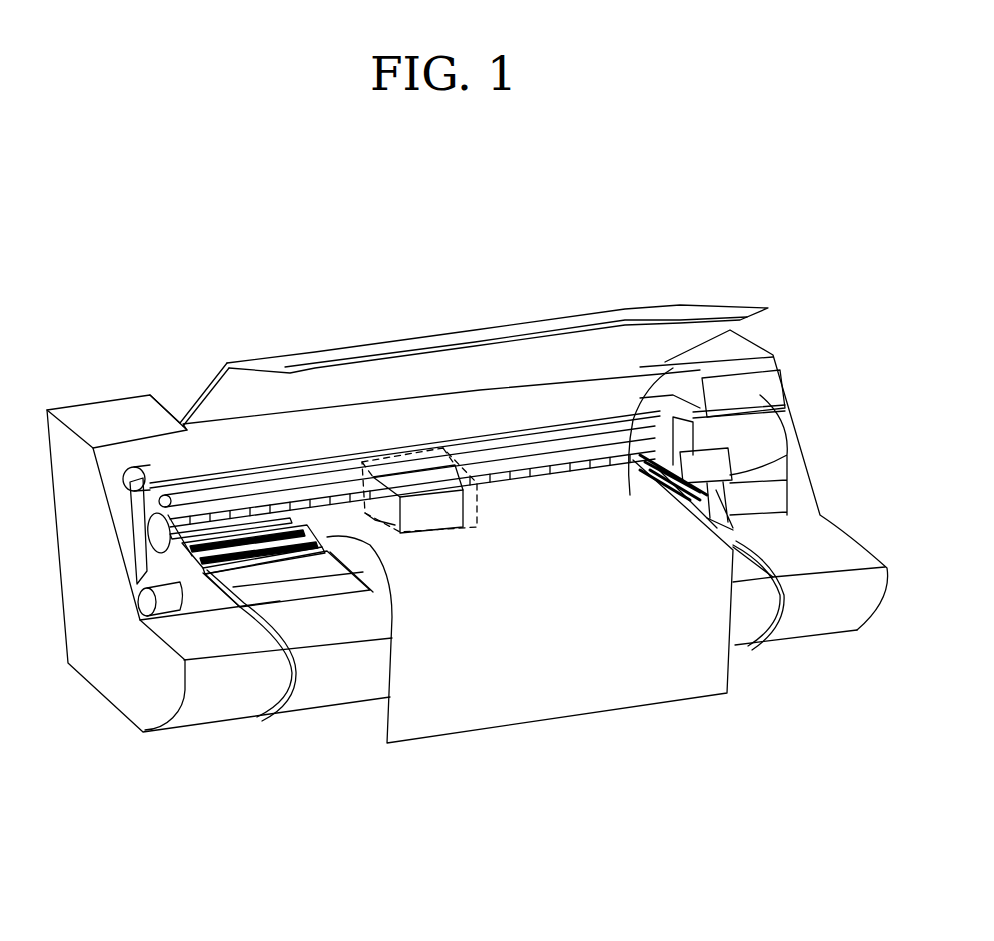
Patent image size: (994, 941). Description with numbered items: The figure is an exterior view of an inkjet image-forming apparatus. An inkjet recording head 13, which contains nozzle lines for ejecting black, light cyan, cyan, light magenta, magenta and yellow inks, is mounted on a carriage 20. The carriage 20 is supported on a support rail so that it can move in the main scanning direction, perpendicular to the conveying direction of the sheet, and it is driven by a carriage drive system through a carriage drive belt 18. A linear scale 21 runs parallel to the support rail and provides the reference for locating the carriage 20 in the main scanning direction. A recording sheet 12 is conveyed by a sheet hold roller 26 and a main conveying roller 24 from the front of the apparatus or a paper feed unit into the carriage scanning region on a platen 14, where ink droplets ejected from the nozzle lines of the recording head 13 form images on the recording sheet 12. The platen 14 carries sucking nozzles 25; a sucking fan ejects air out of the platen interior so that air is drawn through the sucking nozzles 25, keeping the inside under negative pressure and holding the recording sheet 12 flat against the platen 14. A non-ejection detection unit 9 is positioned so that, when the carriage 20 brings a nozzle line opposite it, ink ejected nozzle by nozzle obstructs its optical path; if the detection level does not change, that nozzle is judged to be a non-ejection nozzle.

The non-ejection detection unit 9 is at (712, 480).
The recording sheet 12 is at (640, 688).
The inkjet recording head 13 is at (463, 468).
The platen 14 is at (390, 590).
The carriage drive belt 18 is at (612, 420).
The carriage 20 is at (410, 452).
The linear scale 21 is at (548, 470).
The main conveying roller 24 is at (700, 450).
The sucking nozzles 25 is at (190, 432).
The sheet hold roller 26 is at (707, 478).